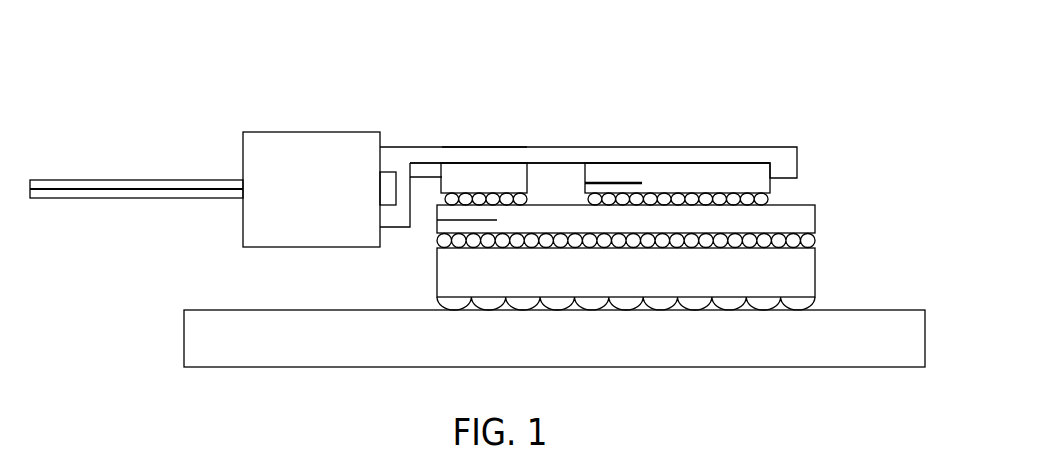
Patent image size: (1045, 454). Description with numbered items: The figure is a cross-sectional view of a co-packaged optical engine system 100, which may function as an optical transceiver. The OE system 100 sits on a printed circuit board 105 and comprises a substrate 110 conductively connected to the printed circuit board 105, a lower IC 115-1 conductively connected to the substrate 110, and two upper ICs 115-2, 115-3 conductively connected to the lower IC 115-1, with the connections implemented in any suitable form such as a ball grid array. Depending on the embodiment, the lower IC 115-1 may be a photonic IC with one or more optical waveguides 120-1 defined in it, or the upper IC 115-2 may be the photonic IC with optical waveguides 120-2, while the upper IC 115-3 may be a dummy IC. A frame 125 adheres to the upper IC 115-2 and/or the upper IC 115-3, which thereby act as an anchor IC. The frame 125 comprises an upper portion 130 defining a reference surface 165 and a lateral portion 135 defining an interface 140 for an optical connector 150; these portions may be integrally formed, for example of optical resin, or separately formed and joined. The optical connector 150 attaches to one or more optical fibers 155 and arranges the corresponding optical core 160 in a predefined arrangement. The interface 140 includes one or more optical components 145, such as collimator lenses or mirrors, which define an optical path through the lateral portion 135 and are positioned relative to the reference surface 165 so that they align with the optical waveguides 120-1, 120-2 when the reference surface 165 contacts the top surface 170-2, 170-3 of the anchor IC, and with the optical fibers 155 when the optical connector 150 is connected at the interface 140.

The optical engine system 100 is at (842, 83).
The printed circuit board 105 is at (900, 308).
The substrate 110 is at (818, 278).
The lower IC 115-1 is at (818, 214).
The upper IC 115-2 is at (762, 177).
The upper IC 115-3 is at (515, 178).
The optical waveguides 120-1 is at (440, 221).
The optical waveguides 120-2 is at (638, 183).
The frame 125 is at (807, 154).
The upper portion 130 is at (476, 146).
The lateral portion 135 is at (427, 148).
The interface 140 is at (382, 143).
The optical components 145 is at (380, 199).
The optical connector 150 is at (273, 131).
The optical fibers 155 is at (70, 178).
The optical core 160 is at (142, 190).
The reference surface 165 is at (585, 162).
The top surface 170-2 is at (716, 160).
The top surface 170-3 is at (512, 162).